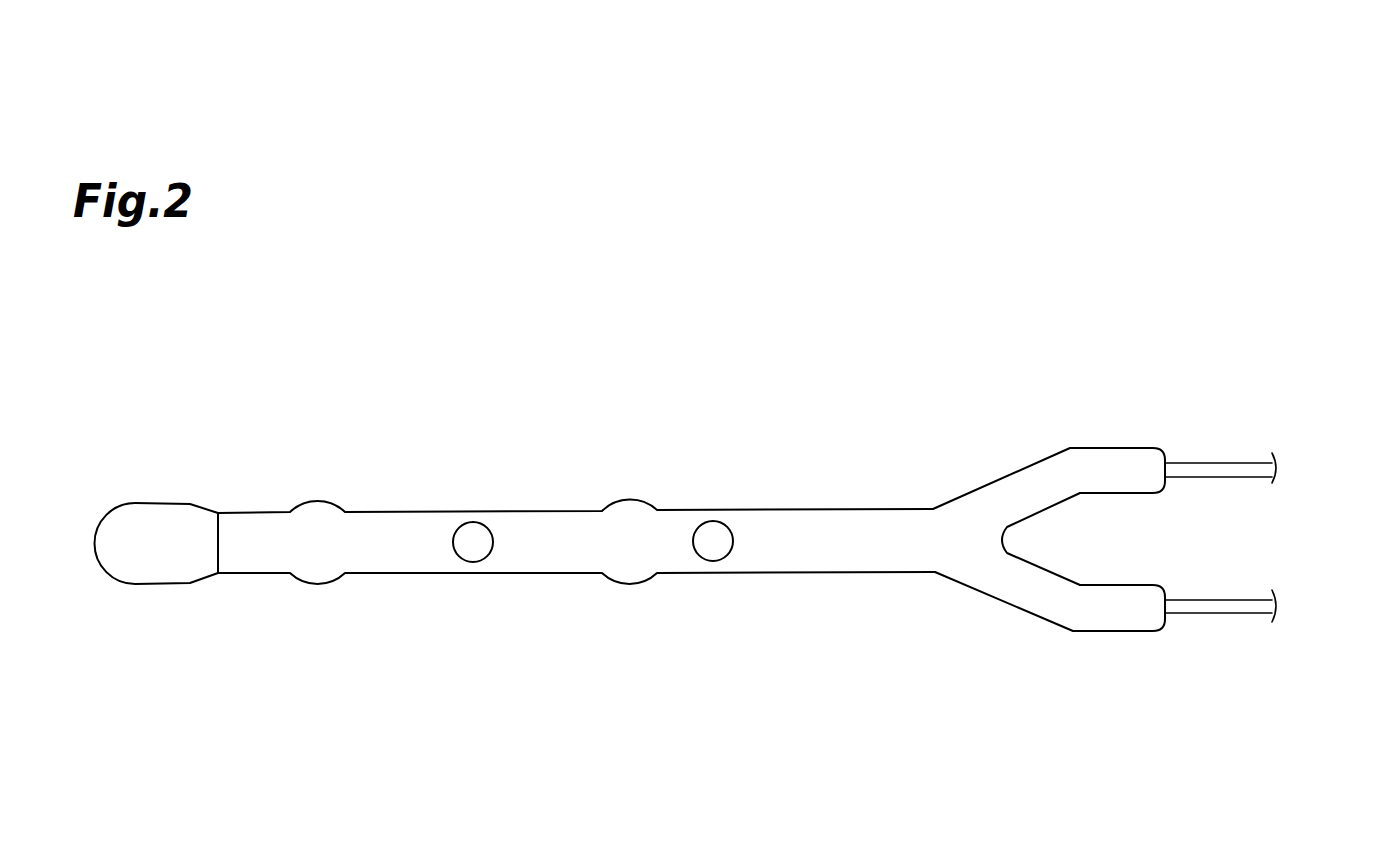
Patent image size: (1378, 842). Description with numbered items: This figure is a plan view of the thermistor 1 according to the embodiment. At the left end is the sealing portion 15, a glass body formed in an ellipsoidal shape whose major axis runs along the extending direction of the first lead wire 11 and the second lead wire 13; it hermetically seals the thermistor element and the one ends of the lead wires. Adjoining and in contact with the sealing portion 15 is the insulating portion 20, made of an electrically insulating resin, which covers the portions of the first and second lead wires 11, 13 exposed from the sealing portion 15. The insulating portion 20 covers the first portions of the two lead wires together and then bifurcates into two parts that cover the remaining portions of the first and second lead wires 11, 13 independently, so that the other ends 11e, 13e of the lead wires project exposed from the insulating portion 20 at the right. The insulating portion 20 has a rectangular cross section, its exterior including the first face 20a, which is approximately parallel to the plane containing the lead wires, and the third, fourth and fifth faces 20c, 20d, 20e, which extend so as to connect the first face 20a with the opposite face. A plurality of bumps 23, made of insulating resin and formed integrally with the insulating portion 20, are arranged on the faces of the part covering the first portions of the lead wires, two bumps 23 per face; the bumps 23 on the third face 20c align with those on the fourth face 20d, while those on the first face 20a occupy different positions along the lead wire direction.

The thermistor 1 is at (1002, 329).
The insulating portion 20 is at (718, 537).
The first face 20a is at (867, 537).
The third face 20c is at (531, 510).
The fourth face 20d is at (812, 573).
The fifth face 20e is at (1118, 495).
The bumps 23 is at (328, 501).
The sealing portion 15 is at (172, 585).
The first lead wire 11 is at (1268, 440).
The other end of the first lead wire 11e is at (1250, 478).
The second lead wire 13 is at (1268, 640).
The other end of the second lead wire 13e is at (1311, 584).